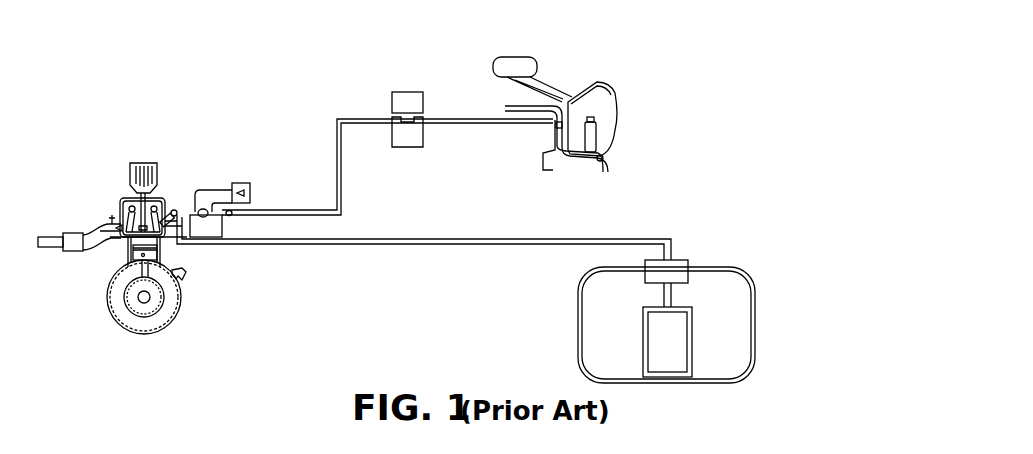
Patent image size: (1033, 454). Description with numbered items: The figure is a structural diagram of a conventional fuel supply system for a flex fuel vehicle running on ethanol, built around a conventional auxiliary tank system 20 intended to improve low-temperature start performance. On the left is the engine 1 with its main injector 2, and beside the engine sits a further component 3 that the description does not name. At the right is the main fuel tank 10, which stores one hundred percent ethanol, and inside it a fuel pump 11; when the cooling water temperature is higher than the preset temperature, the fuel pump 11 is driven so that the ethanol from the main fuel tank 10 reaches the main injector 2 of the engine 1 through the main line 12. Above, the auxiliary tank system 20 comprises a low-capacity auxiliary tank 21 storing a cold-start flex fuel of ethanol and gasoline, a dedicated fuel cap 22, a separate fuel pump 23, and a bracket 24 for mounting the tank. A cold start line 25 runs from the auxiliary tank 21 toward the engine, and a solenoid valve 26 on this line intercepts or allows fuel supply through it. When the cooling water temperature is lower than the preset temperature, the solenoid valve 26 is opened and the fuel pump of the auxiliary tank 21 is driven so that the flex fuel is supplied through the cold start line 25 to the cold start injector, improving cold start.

The engine 1 is at (187, 305).
The main injector 2 is at (177, 212).
The fuel pressure regulator 3 is at (212, 238).
The main fuel tank 10 is at (578, 355).
The fuel pump 11 is at (643, 316).
The main line 12 is at (473, 247).
The auxiliary tank system 20 is at (558, 125).
The auxiliary tank 21 is at (616, 115).
The fuel cap 22 is at (492, 64).
The fuel pump 23 is at (606, 146).
The bracket 24 is at (545, 165).
The cold start line 25 is at (337, 153).
The solenoid valve 26 is at (424, 138).